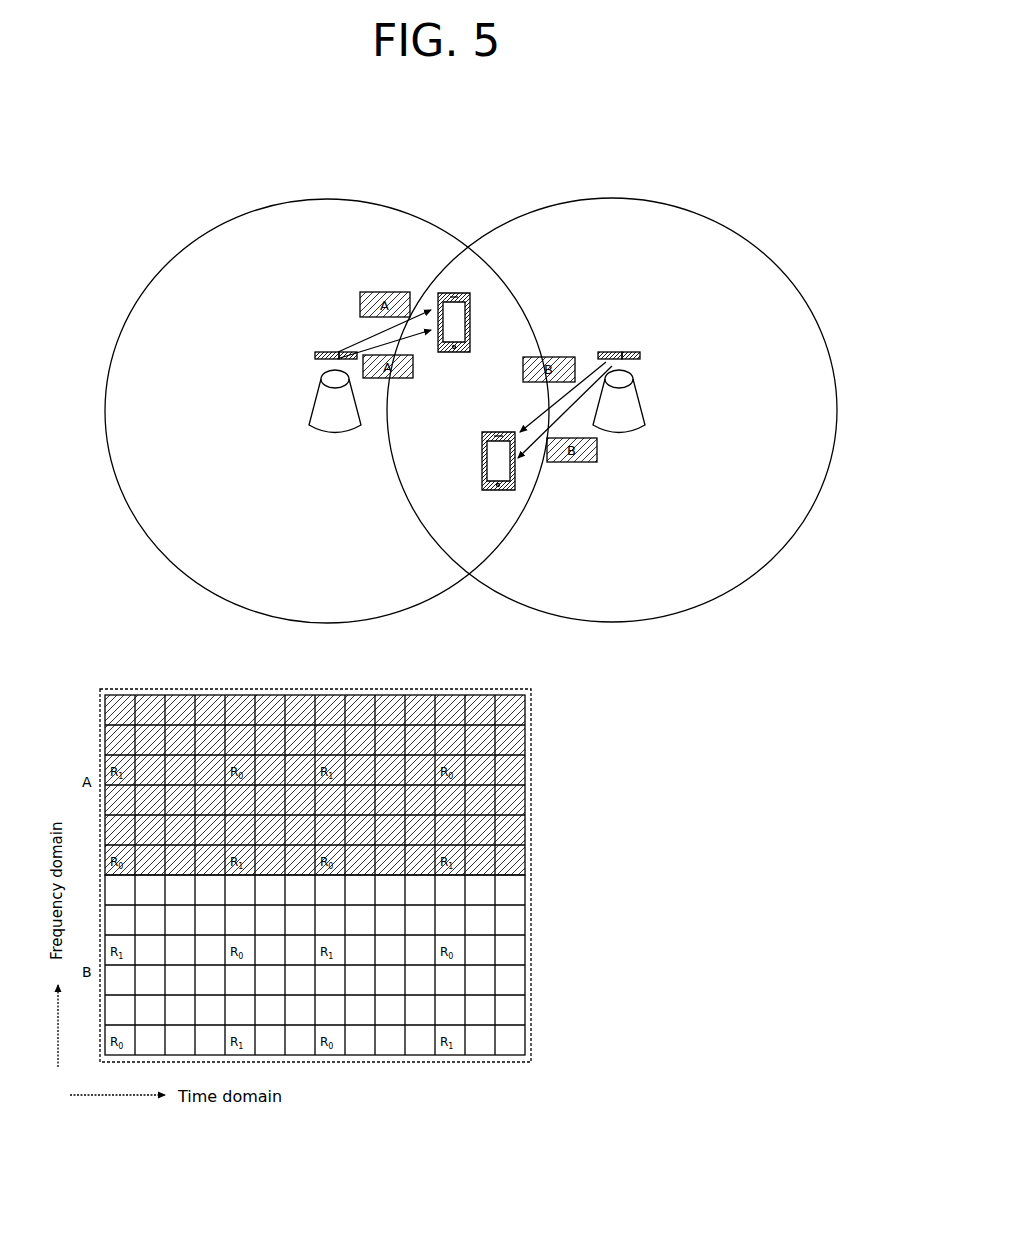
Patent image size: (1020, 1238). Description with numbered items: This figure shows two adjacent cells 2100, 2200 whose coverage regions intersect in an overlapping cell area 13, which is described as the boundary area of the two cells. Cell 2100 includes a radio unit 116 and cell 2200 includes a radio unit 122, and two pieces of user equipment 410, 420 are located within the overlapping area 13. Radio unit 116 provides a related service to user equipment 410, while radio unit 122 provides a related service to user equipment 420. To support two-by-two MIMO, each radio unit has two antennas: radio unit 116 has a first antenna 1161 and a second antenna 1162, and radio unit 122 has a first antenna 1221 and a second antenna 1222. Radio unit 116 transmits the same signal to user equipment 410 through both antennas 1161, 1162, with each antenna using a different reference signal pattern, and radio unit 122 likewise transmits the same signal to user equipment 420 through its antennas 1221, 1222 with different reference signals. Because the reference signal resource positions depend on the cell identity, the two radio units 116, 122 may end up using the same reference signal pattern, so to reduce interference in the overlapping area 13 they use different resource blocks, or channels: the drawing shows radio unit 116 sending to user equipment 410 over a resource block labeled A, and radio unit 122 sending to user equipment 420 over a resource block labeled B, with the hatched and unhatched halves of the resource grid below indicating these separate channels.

The cell 2100 is at (416, 216).
The cell 2200 is at (700, 216).
The overlapping cell area 13 is at (470, 546).
The radio unit 116 is at (303, 355).
The first antenna 1161 is at (328, 353).
The second antenna 1162 is at (346, 353).
The user equipment 410 is at (472, 331).
The radio unit 122 is at (639, 353).
The first antenna 1221 is at (612, 353).
The second antenna 1222 is at (624, 353).
The user equipment 420 is at (480, 468).